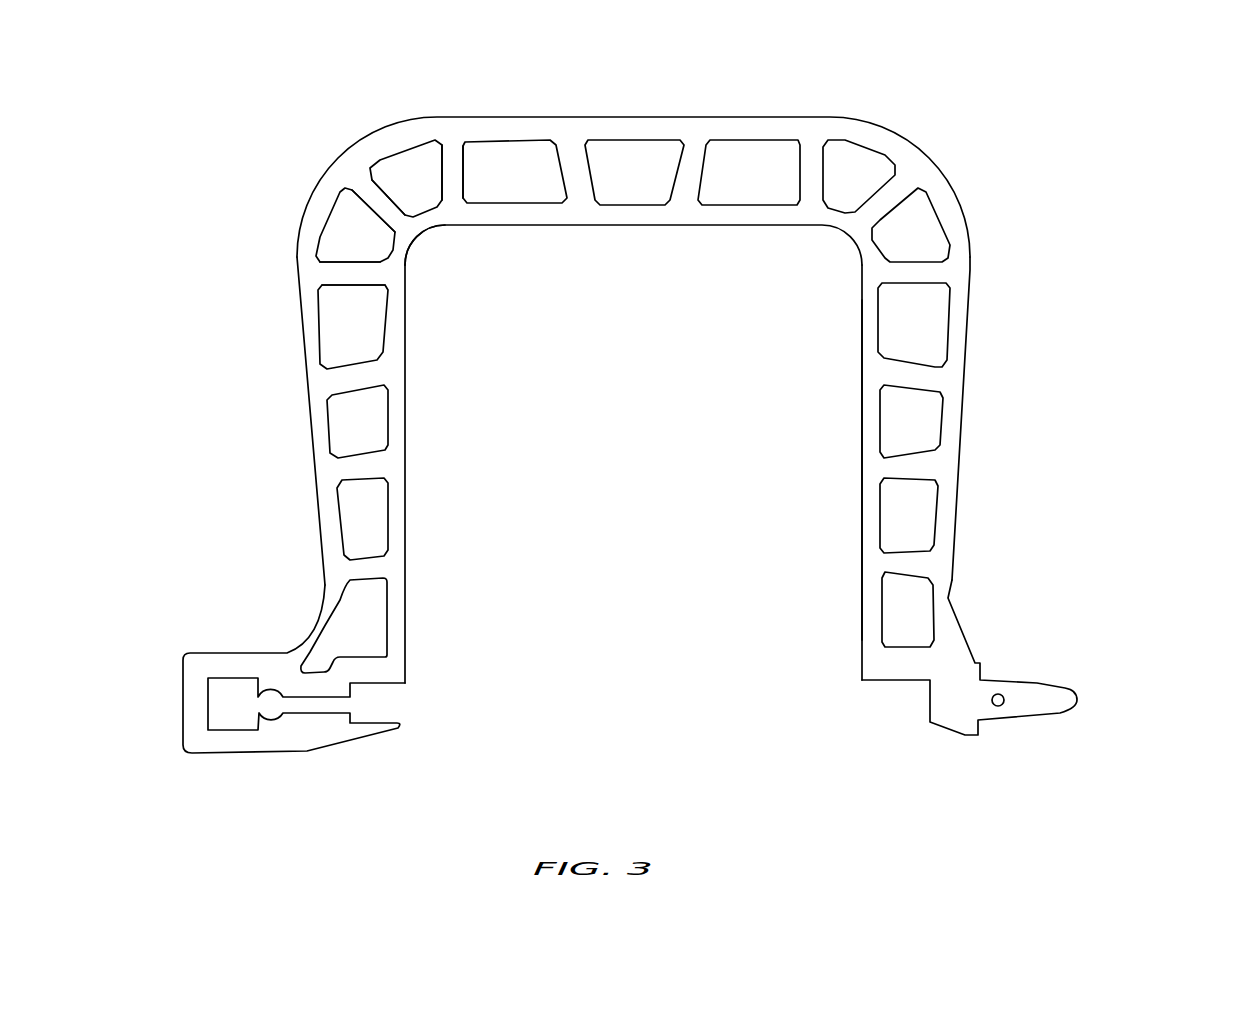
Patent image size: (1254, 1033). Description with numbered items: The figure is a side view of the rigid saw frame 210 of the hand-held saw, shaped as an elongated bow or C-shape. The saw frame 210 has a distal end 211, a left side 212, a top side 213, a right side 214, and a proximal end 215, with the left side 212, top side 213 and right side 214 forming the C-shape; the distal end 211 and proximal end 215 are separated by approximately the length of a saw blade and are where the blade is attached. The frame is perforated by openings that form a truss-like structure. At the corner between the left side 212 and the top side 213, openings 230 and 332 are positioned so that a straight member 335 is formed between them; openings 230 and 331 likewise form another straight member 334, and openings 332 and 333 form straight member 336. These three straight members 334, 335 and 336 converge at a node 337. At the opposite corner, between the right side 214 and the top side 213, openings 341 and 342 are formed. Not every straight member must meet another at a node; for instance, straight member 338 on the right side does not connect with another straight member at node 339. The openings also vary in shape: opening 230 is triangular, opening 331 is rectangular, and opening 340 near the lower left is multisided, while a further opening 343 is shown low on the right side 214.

The saw frame 210 is at (702, 428).
The distal end 211 is at (312, 730).
The left side 212 is at (415, 488).
The top side 213 is at (672, 237).
The right side 214 is at (856, 461).
The proximal end 215 is at (950, 702).
The opening 230 is at (412, 177).
The opening 331 is at (515, 170).
The opening 332 is at (356, 235).
The opening 333 is at (353, 320).
The straight member 334 is at (453, 178).
The straight member 335 is at (377, 197).
The straight member 336 is at (352, 277).
The node 337 is at (408, 233).
The straight member 338 is at (918, 375).
The node 339 is at (872, 370).
The opening 340 is at (370, 623).
The opening 341 is at (855, 165).
The opening 342 is at (903, 232).
The opening 343 is at (897, 612).